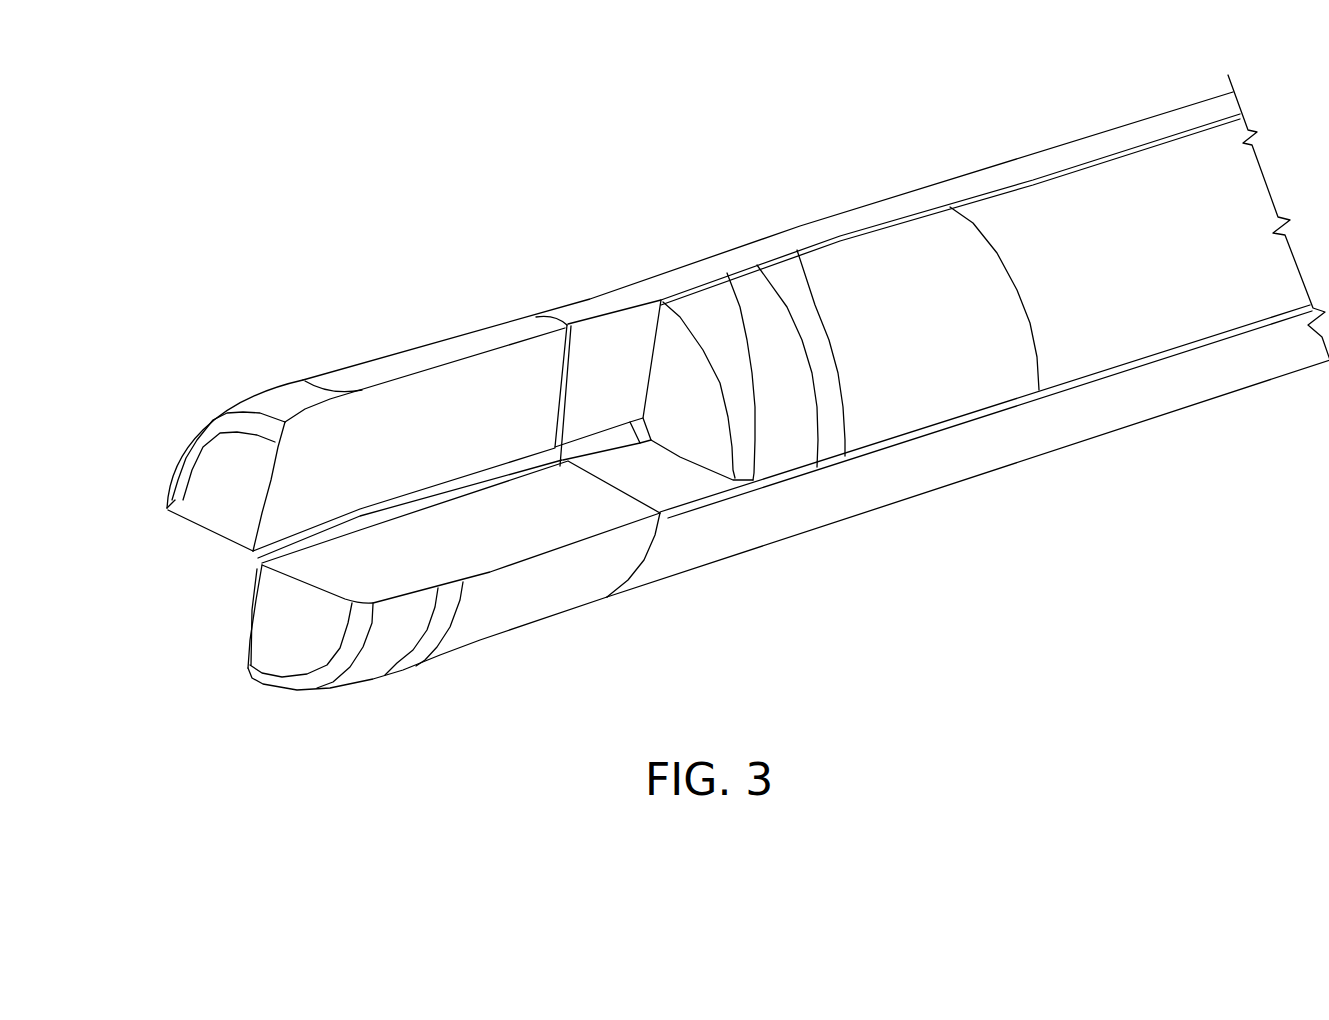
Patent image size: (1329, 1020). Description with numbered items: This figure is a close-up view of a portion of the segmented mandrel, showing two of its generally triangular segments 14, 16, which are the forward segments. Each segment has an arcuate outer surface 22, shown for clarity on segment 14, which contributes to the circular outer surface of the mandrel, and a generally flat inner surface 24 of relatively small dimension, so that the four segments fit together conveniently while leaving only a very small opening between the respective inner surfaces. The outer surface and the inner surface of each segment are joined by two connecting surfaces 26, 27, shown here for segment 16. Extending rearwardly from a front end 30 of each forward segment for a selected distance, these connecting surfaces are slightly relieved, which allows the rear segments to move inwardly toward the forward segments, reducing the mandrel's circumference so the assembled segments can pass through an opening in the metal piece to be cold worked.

The segment 14 is at (482, 652).
The segment 16 is at (466, 322).
The arcuate outer surface 22 is at (553, 578).
The inner surface 24 is at (255, 560).
The connecting surface 26 is at (322, 443).
The connecting surface 27 is at (222, 542).
The front end 30 is at (187, 522).